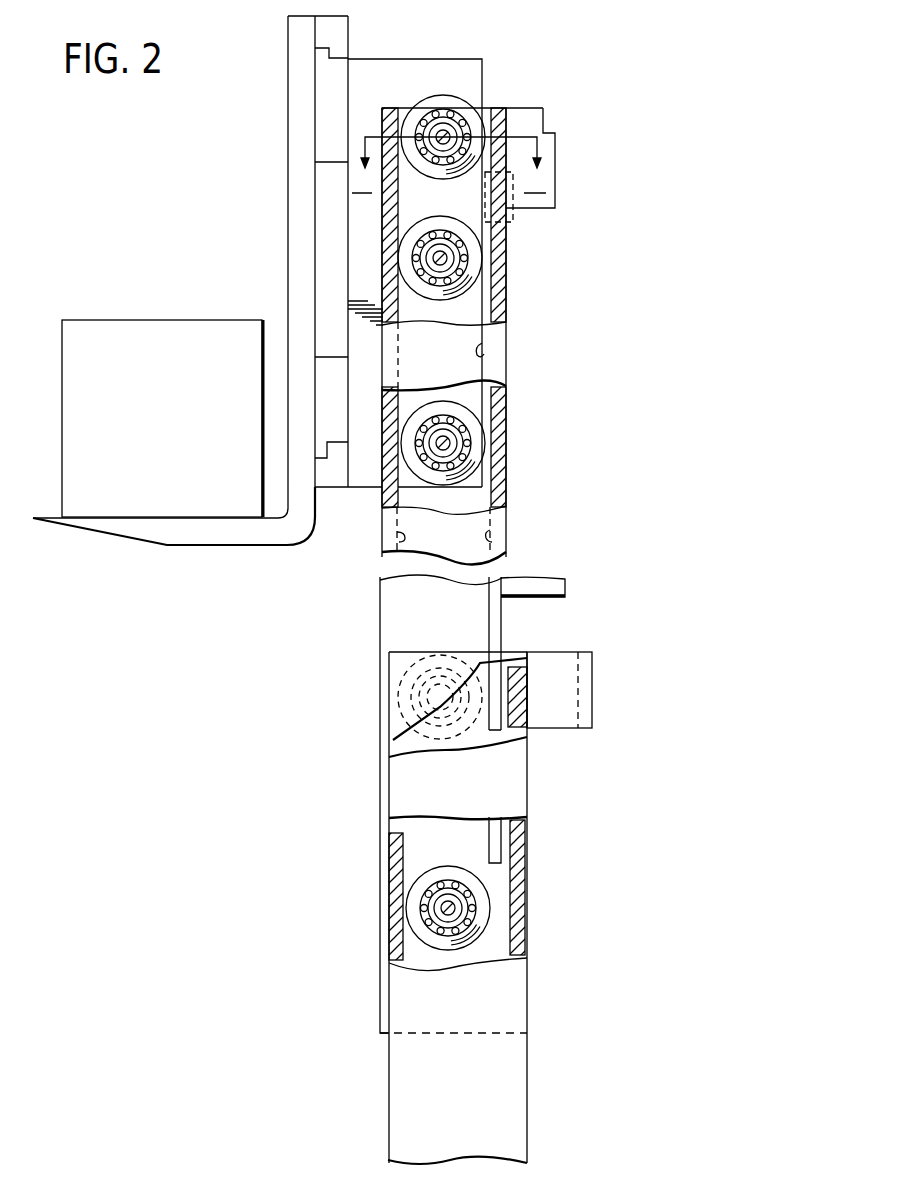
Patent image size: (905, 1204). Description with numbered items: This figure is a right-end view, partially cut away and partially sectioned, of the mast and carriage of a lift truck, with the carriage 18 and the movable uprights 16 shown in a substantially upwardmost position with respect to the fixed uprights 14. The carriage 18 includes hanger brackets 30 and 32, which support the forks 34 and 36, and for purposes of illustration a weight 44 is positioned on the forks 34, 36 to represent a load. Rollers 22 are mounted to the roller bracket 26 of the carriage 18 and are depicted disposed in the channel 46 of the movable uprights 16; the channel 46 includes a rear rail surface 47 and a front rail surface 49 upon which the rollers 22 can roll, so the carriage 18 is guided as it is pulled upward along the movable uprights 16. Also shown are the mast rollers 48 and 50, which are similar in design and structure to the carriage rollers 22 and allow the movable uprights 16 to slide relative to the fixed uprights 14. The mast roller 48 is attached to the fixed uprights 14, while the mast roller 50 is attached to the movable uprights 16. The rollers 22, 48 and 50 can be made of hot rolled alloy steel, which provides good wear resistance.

The fixed uprights 14 is at (528, 778).
The movable uprights 16 is at (498, 285).
The carriage 18 is at (333, 129).
The rollers 22 is at (483, 443).
The roller bracket 26 is at (440, 80).
The hanger bracket 30 is at (330, 95).
The hanger bracket 32 is at (337, 415).
The fork 34 is at (168, 526).
The fork 36 is at (142, 527).
The weight 44 is at (204, 476).
The channel 46 is at (482, 343).
The rear rail surface 47 is at (398, 547).
The mast roller 48 is at (436, 715).
The front rail surface 49 is at (503, 523).
The mast roller 50 is at (483, 900).